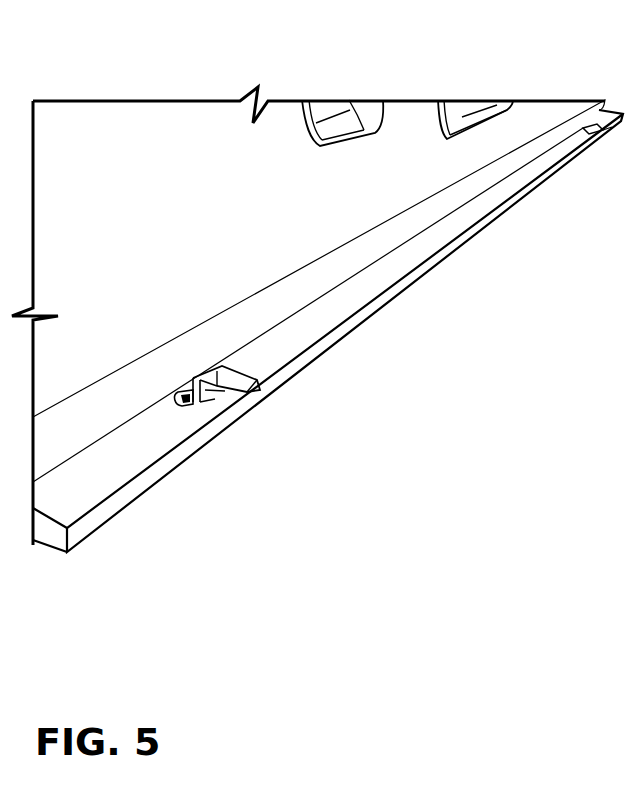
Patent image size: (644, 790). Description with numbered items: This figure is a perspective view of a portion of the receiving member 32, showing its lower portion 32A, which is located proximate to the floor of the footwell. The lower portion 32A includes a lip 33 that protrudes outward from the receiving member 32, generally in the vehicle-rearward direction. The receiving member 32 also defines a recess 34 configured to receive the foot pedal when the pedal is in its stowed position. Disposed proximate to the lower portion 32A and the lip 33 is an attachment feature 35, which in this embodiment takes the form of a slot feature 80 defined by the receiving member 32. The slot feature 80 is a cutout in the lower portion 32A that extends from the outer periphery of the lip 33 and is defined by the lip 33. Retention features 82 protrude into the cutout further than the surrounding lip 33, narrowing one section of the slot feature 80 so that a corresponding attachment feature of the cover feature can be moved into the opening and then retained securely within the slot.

The receiving member 32 is at (108, 244).
The lower portion 32A is at (93, 421).
The lip 33 is at (115, 460).
The recess 34 is at (324, 119).
The attachment feature 35 is at (604, 144).
The slot feature 80 is at (226, 370).
The retention features 82 is at (195, 378).